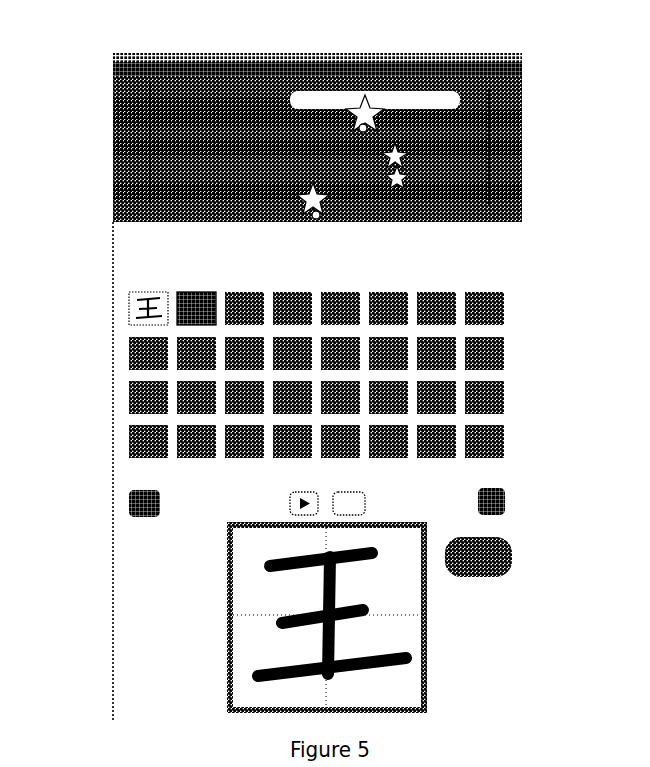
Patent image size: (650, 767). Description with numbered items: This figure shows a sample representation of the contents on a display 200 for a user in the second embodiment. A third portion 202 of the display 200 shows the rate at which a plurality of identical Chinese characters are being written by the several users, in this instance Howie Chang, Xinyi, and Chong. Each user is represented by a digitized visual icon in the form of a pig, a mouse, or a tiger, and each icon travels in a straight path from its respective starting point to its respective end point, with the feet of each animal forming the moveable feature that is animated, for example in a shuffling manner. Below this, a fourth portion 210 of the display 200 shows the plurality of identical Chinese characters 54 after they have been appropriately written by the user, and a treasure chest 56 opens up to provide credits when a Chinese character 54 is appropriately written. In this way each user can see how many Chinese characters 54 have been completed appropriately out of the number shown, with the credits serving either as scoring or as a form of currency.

The display 200 is at (328, 366).
The third portion 202 is at (507, 72).
The Chinese character 54 is at (147, 313).
The treasure chest 56 is at (148, 348).
The fourth portion 210 is at (323, 375).